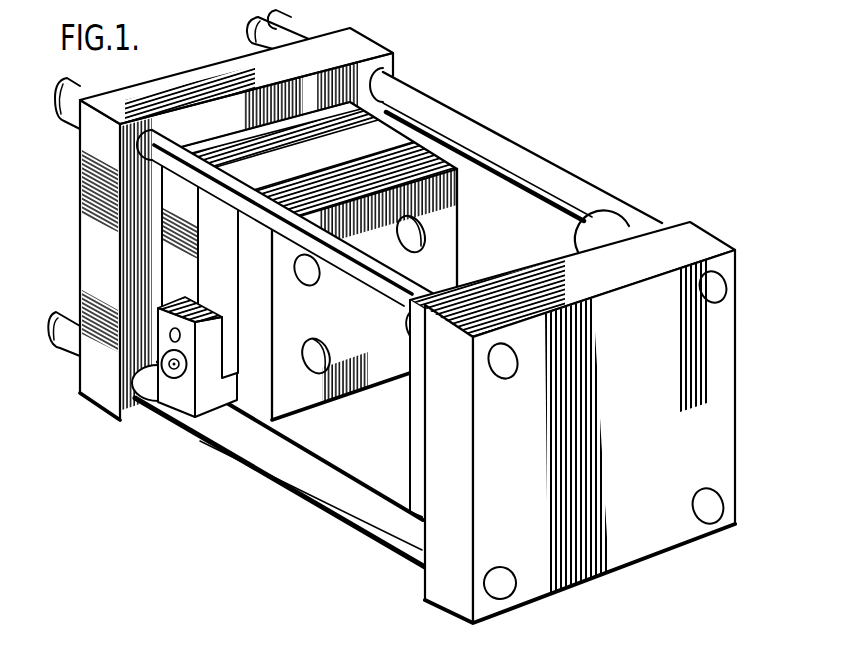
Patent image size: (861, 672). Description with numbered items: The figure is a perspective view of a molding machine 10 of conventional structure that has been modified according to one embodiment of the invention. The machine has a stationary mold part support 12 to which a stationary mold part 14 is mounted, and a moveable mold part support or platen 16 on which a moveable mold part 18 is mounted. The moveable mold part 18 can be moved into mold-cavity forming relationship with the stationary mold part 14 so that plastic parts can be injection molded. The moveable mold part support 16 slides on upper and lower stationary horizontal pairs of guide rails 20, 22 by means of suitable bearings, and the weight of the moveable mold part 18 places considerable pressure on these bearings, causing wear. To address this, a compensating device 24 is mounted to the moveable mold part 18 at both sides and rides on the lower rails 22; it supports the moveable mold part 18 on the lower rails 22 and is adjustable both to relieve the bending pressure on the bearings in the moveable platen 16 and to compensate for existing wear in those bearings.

The molding machine 10 is at (601, 166).
The stationary mold part support 12 is at (719, 438).
The stationary mold part 14 is at (619, 225).
The moveable mold part support or platen 16 is at (362, 49).
The moveable mold part 18 is at (443, 208).
The upper guide rails 20 is at (488, 141).
The lower guide rails 22 is at (366, 493).
The compensating device 24 is at (200, 383).